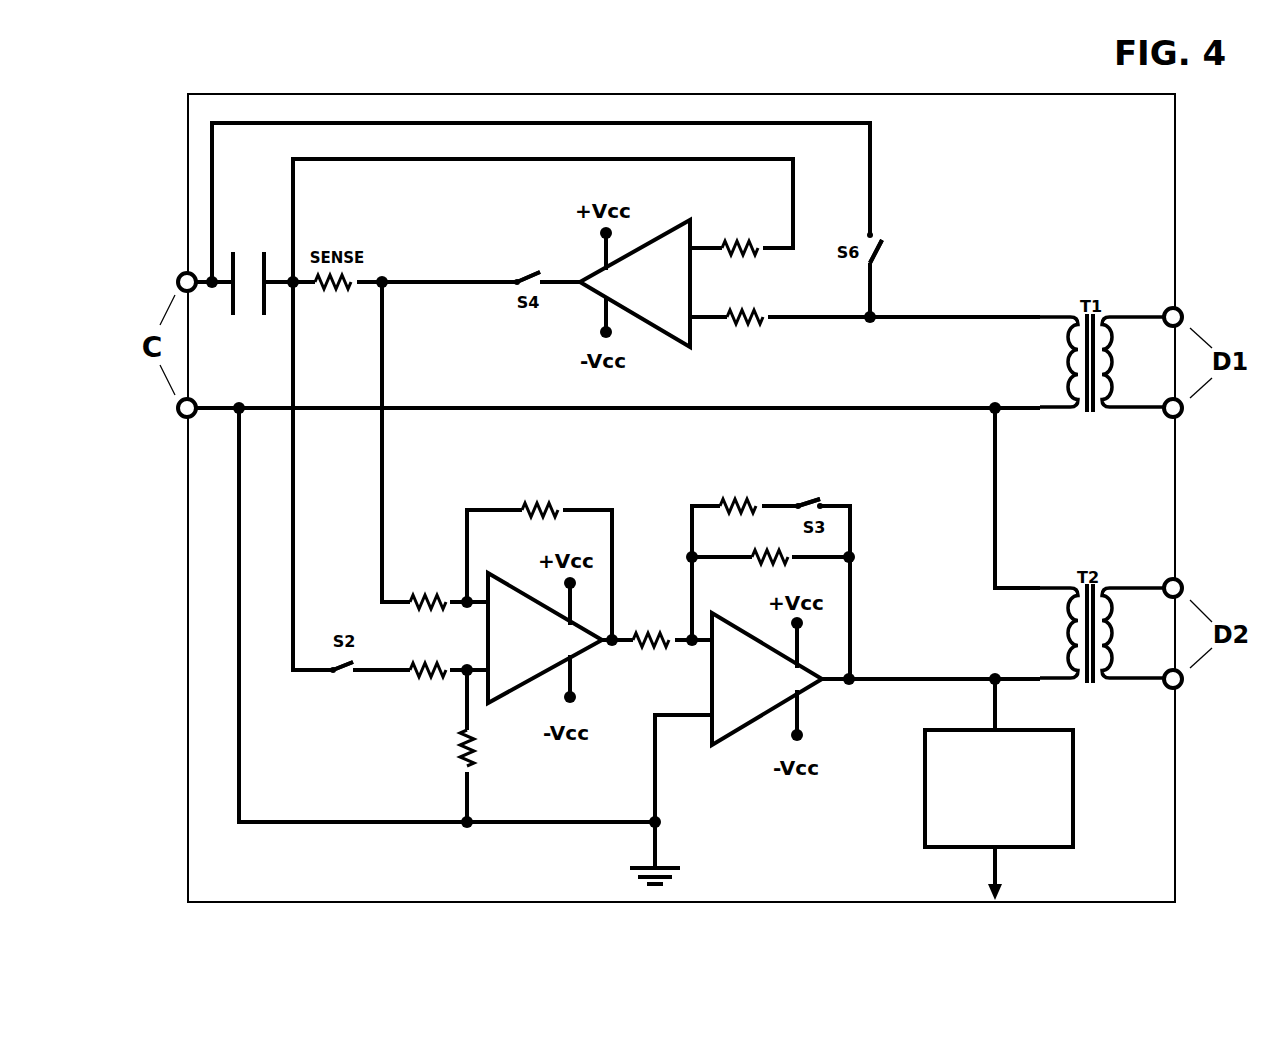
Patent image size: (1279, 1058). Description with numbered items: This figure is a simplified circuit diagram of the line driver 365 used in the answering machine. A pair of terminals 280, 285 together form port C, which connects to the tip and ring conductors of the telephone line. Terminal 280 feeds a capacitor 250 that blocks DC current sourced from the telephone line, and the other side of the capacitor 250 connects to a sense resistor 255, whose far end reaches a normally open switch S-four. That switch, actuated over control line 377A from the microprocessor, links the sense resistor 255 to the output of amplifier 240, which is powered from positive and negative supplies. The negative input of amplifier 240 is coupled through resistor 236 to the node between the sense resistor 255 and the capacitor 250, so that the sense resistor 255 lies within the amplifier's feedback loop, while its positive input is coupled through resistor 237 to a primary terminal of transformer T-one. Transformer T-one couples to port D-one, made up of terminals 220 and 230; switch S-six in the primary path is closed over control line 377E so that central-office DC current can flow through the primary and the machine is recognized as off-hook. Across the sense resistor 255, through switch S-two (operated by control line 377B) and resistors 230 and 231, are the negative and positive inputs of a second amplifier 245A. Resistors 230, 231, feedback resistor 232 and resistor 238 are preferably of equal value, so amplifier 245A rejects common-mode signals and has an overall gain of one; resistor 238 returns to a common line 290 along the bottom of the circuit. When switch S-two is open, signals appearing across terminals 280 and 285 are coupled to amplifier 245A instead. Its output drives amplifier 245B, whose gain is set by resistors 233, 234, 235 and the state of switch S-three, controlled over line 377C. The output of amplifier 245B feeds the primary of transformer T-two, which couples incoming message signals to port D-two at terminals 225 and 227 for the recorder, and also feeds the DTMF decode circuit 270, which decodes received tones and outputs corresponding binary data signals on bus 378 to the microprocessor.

The line driver 365 is at (922, 102).
The terminal 280 is at (176, 272).
The terminal 285 is at (176, 420).
The capacitor 250 is at (244, 301).
The sense resistor 255 is at (334, 299).
The switch S4 control signal 377A is at (523, 256).
The amplifier 240 is at (635, 283).
The resistor 236 is at (743, 237).
The resistor 237 is at (746, 305).
The control line 377E is at (899, 250).
The terminal 220 is at (1188, 305).
The terminal / resistor 230 is at (1188, 422).
The terminal 225 is at (1188, 572).
The terminal 227 is at (1188, 693).
The feedback resistor 232 is at (540, 498).
The resistor 231 is at (428, 660).
The resistor 238 is at (447, 748).
The resistor 235 is at (653, 629).
The resistor 233 is at (738, 494).
The resistor 234 is at (770, 547).
The second amplifier 245A is at (545, 638).
The amplifier 245B is at (767, 679).
The switch S2 control signal 377B is at (343, 690).
The switch S3 control signal 377C is at (813, 480).
The ground line 290 is at (397, 820).
The DTMF decode circuit 270 is at (999, 788).
The bus 378 is at (1003, 892).